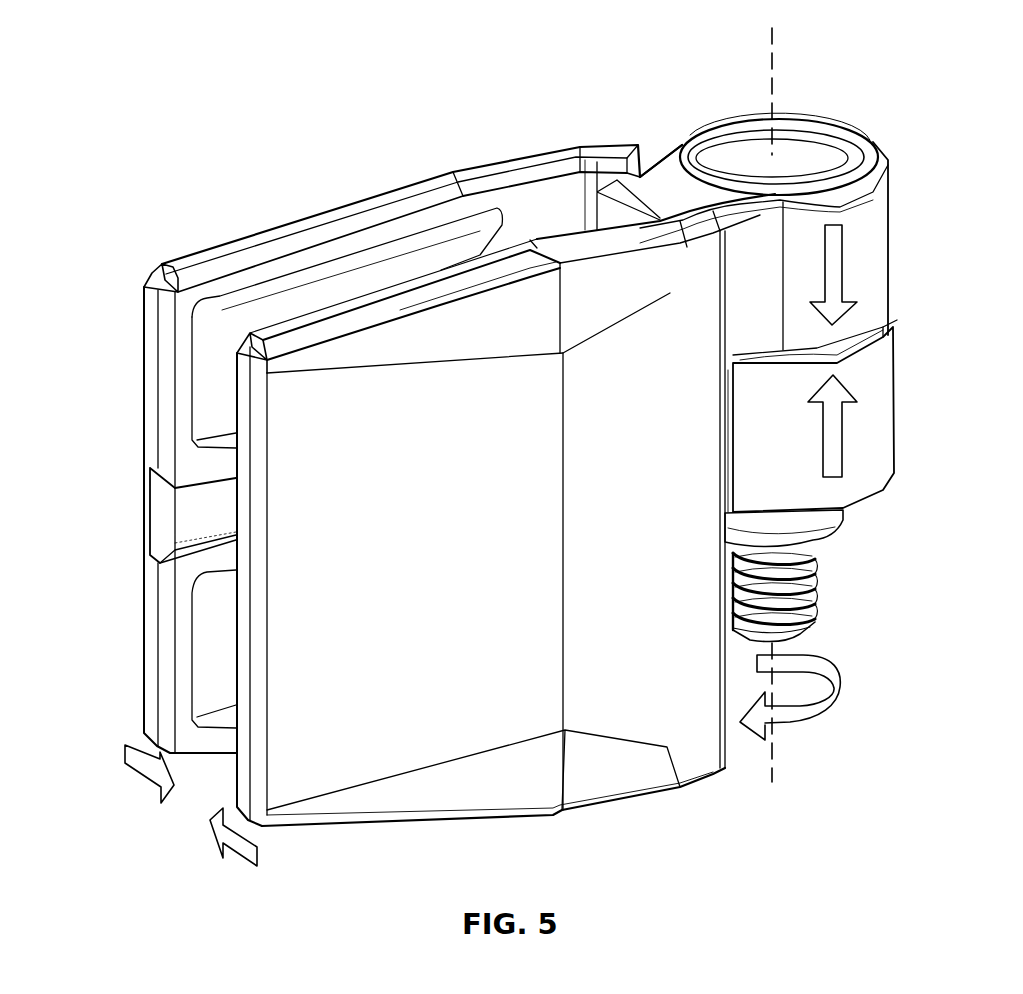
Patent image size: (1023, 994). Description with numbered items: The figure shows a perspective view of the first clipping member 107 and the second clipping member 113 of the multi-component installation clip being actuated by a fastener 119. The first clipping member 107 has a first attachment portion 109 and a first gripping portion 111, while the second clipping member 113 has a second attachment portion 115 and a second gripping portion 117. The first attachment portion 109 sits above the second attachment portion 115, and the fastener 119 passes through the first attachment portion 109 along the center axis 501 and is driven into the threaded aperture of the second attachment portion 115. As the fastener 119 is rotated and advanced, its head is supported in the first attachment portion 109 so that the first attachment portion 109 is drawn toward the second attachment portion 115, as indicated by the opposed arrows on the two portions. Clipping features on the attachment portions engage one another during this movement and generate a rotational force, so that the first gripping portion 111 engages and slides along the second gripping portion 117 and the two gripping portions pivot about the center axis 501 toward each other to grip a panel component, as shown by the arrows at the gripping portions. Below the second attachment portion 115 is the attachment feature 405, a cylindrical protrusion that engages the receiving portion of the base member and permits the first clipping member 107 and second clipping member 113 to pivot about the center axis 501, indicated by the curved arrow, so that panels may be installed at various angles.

The first clipping member 107 is at (630, 836).
The first attachment portion 109 is at (866, 262).
The first gripping portion 111 is at (453, 737).
The second clipping member 113 is at (321, 148).
The second attachment portion 115 is at (865, 437).
The second gripping portion 117 is at (217, 323).
The fastener 119 is at (808, 592).
The attachment feature 405 is at (820, 527).
The center axis 501 is at (773, 85).